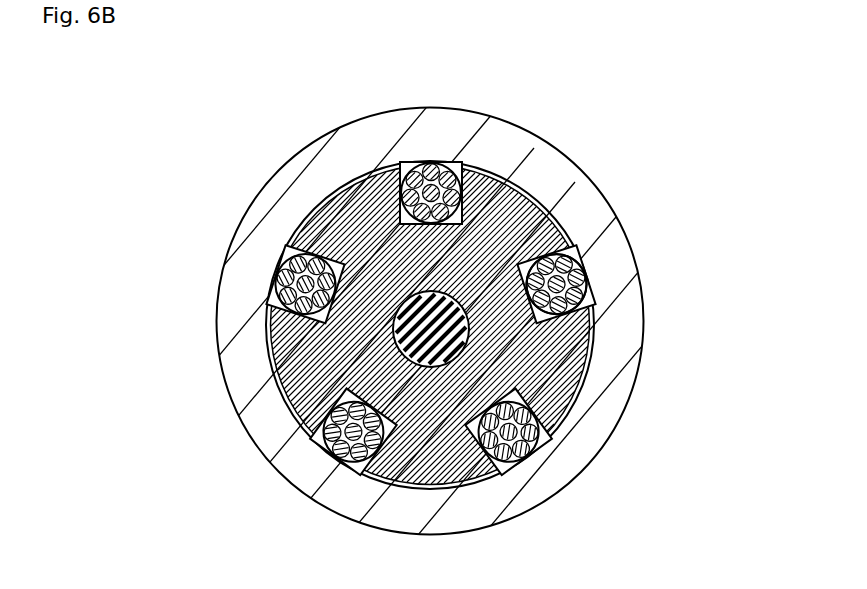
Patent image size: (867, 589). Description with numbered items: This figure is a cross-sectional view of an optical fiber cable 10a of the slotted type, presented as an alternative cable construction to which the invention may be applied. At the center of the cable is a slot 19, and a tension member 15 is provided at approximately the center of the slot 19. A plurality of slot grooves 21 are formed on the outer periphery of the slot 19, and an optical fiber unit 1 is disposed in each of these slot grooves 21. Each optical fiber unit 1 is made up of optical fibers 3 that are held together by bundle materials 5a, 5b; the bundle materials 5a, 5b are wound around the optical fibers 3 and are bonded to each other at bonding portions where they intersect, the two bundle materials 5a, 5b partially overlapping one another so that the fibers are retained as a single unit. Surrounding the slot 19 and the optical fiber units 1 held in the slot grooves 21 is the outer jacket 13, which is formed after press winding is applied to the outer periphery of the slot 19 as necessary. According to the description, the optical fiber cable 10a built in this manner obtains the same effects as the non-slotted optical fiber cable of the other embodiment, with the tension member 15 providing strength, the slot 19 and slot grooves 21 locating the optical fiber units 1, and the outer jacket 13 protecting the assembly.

The optical fiber unit 1 is at (563, 325).
The optical fibers 3 is at (583, 298).
The bundle material 5a is at (582, 260).
The bundle material 5b is at (646, 330).
The optical fiber cable 10a is at (581, 157).
The outer jacket 13 is at (302, 188).
The tension member 15 is at (394, 336).
The slot 19 is at (557, 405).
The slot grooves 21 is at (548, 436).